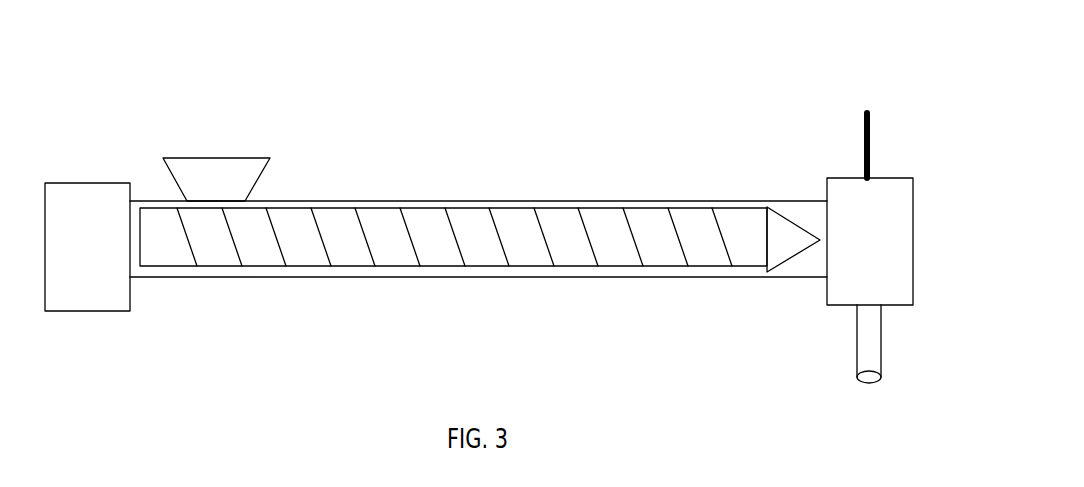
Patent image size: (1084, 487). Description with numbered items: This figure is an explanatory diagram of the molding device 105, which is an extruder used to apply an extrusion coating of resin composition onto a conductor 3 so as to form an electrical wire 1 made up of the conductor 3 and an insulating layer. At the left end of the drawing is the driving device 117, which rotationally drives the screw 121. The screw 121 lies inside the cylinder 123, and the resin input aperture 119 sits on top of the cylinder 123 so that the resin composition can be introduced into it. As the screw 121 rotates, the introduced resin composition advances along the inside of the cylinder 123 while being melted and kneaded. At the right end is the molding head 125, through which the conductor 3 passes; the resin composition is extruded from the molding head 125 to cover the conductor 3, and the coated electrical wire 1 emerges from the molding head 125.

The molding device 105 is at (533, 83).
The driving device 117 is at (88, 311).
The resin input aperture 119 is at (218, 158).
The screw 121 is at (365, 277).
The cylinder 123 is at (622, 277).
The molding head 125 is at (913, 235).
The conductor 3 is at (870, 141).
The electrical wire 1 is at (857, 344).